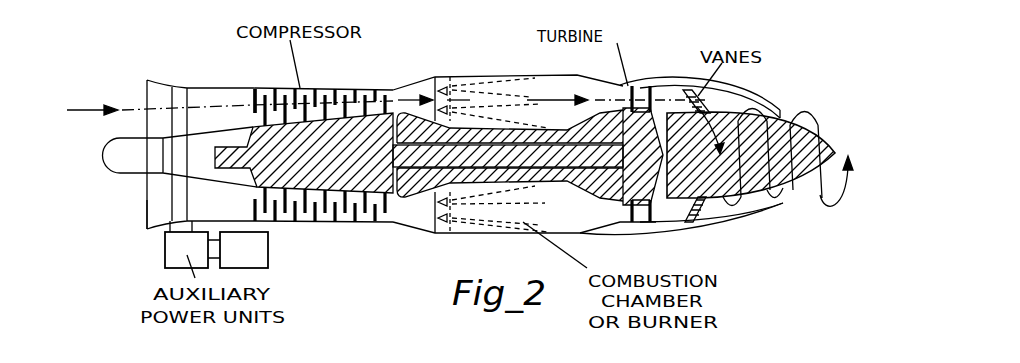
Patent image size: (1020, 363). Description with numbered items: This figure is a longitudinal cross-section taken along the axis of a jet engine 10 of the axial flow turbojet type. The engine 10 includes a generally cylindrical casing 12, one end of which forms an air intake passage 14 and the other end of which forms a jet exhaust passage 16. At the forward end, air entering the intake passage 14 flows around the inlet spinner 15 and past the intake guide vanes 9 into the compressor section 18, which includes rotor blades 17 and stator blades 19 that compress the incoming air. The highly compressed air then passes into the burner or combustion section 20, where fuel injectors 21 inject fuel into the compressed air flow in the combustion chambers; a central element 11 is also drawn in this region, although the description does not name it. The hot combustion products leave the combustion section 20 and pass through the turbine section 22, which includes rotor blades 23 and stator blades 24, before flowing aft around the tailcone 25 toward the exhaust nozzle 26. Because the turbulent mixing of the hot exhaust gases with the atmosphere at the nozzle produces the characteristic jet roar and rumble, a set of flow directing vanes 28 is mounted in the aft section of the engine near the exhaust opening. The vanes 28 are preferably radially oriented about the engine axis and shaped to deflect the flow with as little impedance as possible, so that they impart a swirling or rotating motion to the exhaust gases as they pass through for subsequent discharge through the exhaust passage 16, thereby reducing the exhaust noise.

The intake guide vanes 9 is at (171, 96).
The air intake passage 14 is at (150, 203).
The inlet spinner 15 is at (107, 153).
The stator blades 19 is at (252, 99).
The rotor blades 17 is at (288, 97).
The compressor section 18 is at (317, 84).
The jet engine 10 is at (373, 228).
The casing 12 is at (403, 87).
The fuel injectors 21 is at (443, 86).
The burner or combustion section 20 is at (494, 80).
The shaft 11 is at (562, 152).
The rotor blades 23 is at (621, 93).
The turbine section 22 is at (641, 85).
The stator blades 24 is at (669, 88).
The jet exhaust passage 16 is at (783, 204).
The exhaust nozzle 26 is at (740, 219).
The tailcone 25 is at (751, 169).
The flow directing vanes 28 is at (806, 120).